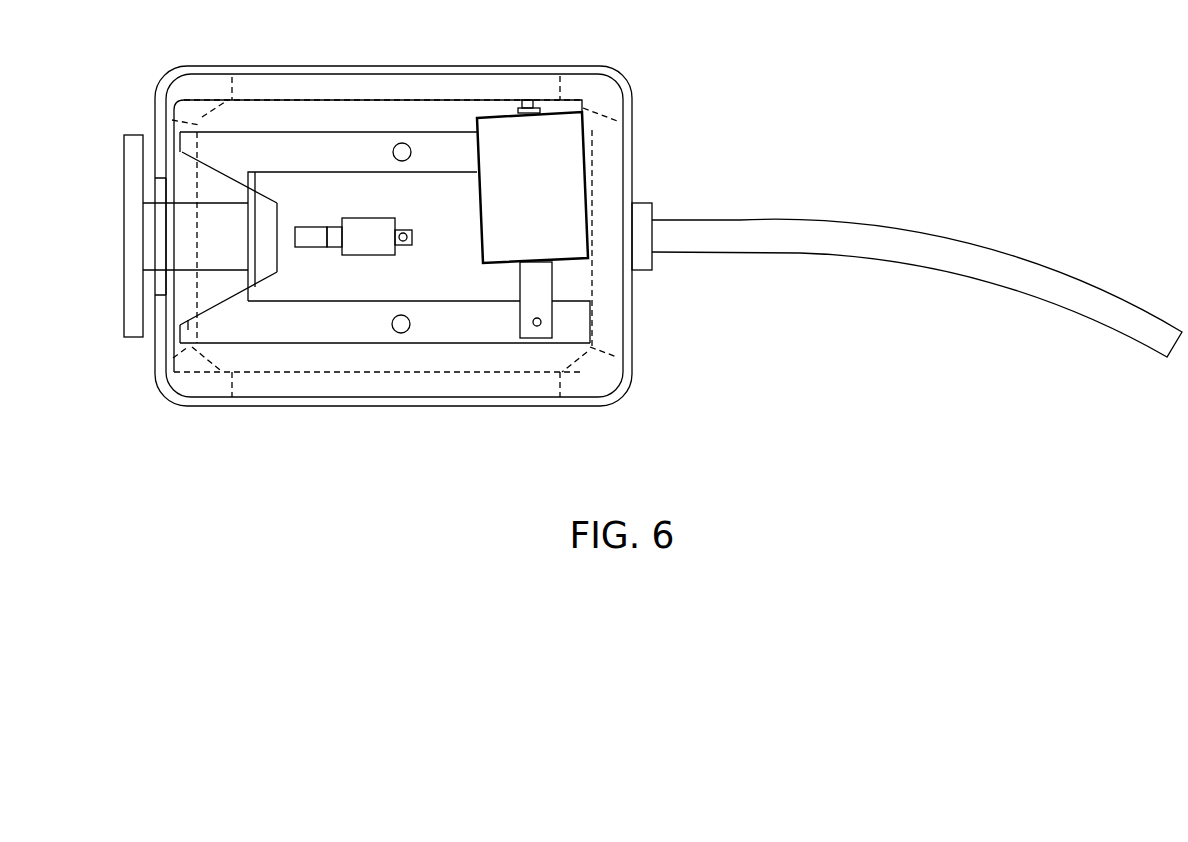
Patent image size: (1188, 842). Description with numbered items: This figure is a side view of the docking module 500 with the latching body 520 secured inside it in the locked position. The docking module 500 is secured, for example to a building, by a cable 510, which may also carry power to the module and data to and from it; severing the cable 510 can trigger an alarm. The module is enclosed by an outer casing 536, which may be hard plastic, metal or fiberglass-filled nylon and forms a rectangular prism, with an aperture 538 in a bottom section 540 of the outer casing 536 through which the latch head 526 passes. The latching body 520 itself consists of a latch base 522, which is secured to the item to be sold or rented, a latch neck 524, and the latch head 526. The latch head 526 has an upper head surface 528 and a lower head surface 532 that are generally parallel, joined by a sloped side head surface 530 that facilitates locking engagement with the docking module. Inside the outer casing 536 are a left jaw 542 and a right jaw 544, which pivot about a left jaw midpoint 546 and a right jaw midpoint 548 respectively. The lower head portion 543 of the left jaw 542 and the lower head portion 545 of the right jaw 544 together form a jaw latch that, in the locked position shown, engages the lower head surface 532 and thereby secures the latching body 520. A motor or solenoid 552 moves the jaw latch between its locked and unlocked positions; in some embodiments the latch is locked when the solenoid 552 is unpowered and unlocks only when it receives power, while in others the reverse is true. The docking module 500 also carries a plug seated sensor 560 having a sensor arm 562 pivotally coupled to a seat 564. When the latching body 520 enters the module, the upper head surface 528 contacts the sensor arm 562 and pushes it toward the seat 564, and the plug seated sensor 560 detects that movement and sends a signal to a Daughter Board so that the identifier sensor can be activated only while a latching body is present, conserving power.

The docking module 500 is at (615, 87).
The cable 510 is at (917, 232).
The latching body 520 is at (133, 153).
The latch base 522 is at (133, 308).
The latch neck 524 is at (203, 247).
The latch head 526 is at (272, 257).
The upper head surface 528 is at (275, 202).
The side head surface 530 is at (263, 283).
The lower head surface 532 is at (250, 192).
The outer casing 536 is at (623, 342).
The aperture 538 is at (162, 177).
The bottom section 540 is at (170, 100).
The left jaw 542 is at (298, 128).
The lower head portion of the left jaw 543 is at (208, 142).
The right jaw 544 is at (285, 325).
The lower head portion of the right jaw 545 is at (192, 330).
The left jaw midpoint 546 is at (400, 143).
The right jaw midpoint 548 is at (398, 328).
The solenoid 552 is at (553, 185).
The plug seated sensor 560 is at (405, 228).
The sensor arm 562 is at (308, 240).
The seat 564 is at (368, 240).